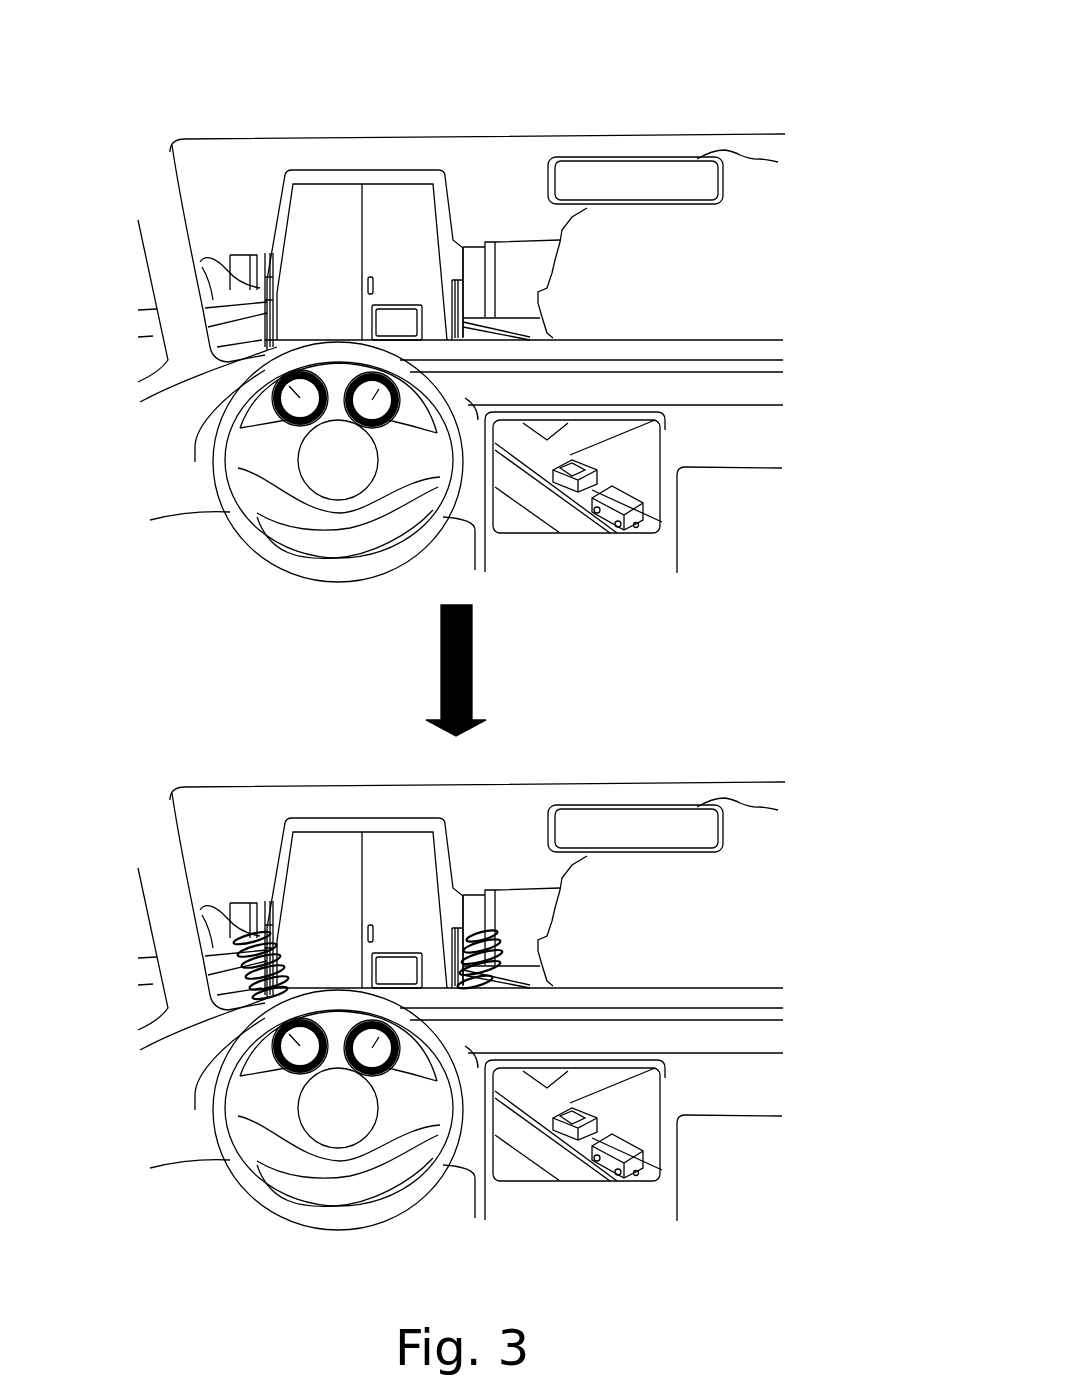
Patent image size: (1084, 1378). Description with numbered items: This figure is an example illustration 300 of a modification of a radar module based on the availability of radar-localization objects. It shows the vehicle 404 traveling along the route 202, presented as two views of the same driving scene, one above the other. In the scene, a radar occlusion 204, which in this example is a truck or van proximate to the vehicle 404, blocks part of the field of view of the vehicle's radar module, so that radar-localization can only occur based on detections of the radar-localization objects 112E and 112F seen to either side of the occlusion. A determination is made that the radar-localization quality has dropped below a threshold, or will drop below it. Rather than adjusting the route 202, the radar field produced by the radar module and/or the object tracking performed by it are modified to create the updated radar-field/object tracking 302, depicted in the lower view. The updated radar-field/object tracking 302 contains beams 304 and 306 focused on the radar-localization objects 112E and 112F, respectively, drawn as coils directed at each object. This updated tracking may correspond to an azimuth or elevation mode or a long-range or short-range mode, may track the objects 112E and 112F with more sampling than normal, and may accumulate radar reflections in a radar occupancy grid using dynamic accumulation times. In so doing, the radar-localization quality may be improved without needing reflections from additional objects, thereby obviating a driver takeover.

The example illustration 300 is at (800, 53).
The route 202 is at (179, 108).
The updated radar-field/object tracking 302 is at (179, 726).
The radar-localization object 112F is at (245, 268).
The radar-localization object 112E is at (470, 262).
The radar occlusion 204 is at (325, 283).
The vehicle 404 is at (562, 388).
The beam 306 is at (245, 974).
The beam 304 is at (497, 973).